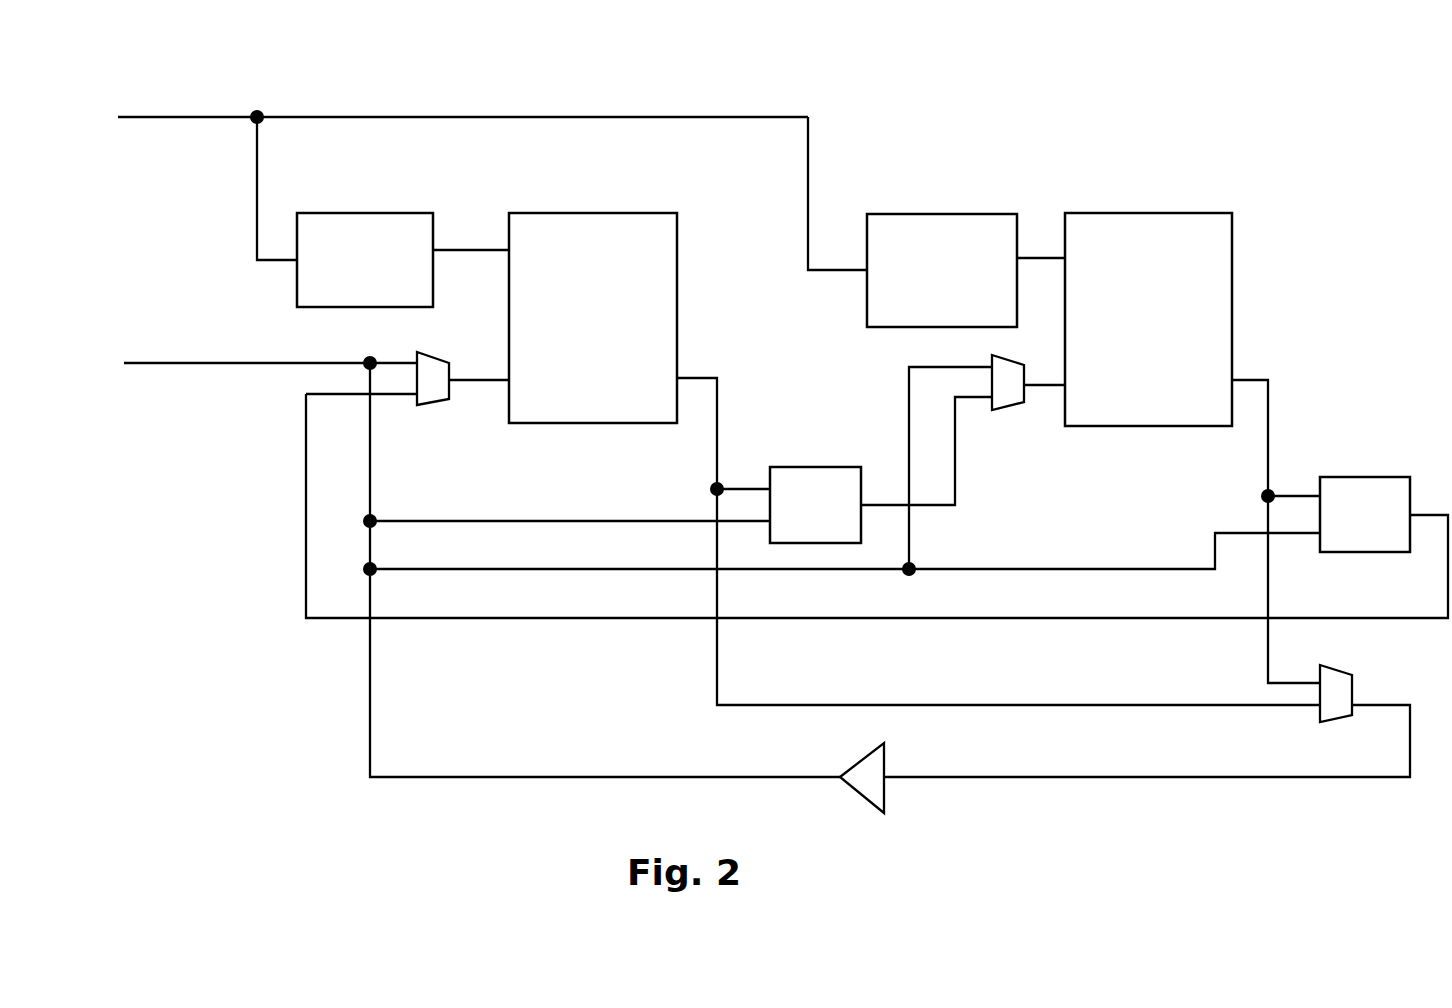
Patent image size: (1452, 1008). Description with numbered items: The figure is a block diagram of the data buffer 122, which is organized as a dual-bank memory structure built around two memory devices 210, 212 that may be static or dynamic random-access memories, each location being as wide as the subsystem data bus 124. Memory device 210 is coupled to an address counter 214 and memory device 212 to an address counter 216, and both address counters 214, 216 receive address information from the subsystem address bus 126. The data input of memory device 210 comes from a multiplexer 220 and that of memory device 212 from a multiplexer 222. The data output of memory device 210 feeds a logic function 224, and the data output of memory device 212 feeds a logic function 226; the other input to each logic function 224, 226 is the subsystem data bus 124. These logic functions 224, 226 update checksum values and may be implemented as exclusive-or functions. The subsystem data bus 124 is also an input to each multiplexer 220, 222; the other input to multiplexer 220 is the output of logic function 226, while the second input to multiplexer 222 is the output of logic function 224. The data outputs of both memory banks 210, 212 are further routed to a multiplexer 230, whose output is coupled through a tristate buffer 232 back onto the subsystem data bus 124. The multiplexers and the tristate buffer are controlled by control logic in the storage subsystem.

The data buffer 122 is at (1261, 104).
The subsystem data bus 124 is at (205, 363).
The subsystem address bus 126 is at (407, 118).
The memory device 210 is at (677, 313).
The memory device 212 is at (1232, 302).
The address counter 214 is at (345, 213).
The address counter 216 is at (910, 214).
The multiplexer 220 is at (435, 405).
The multiplexer 222 is at (1005, 410).
The logic function 224 is at (797, 467).
The logic function 226 is at (1345, 477).
The multiplexer 230 is at (1355, 685).
The tristate buffer 232 is at (860, 756).